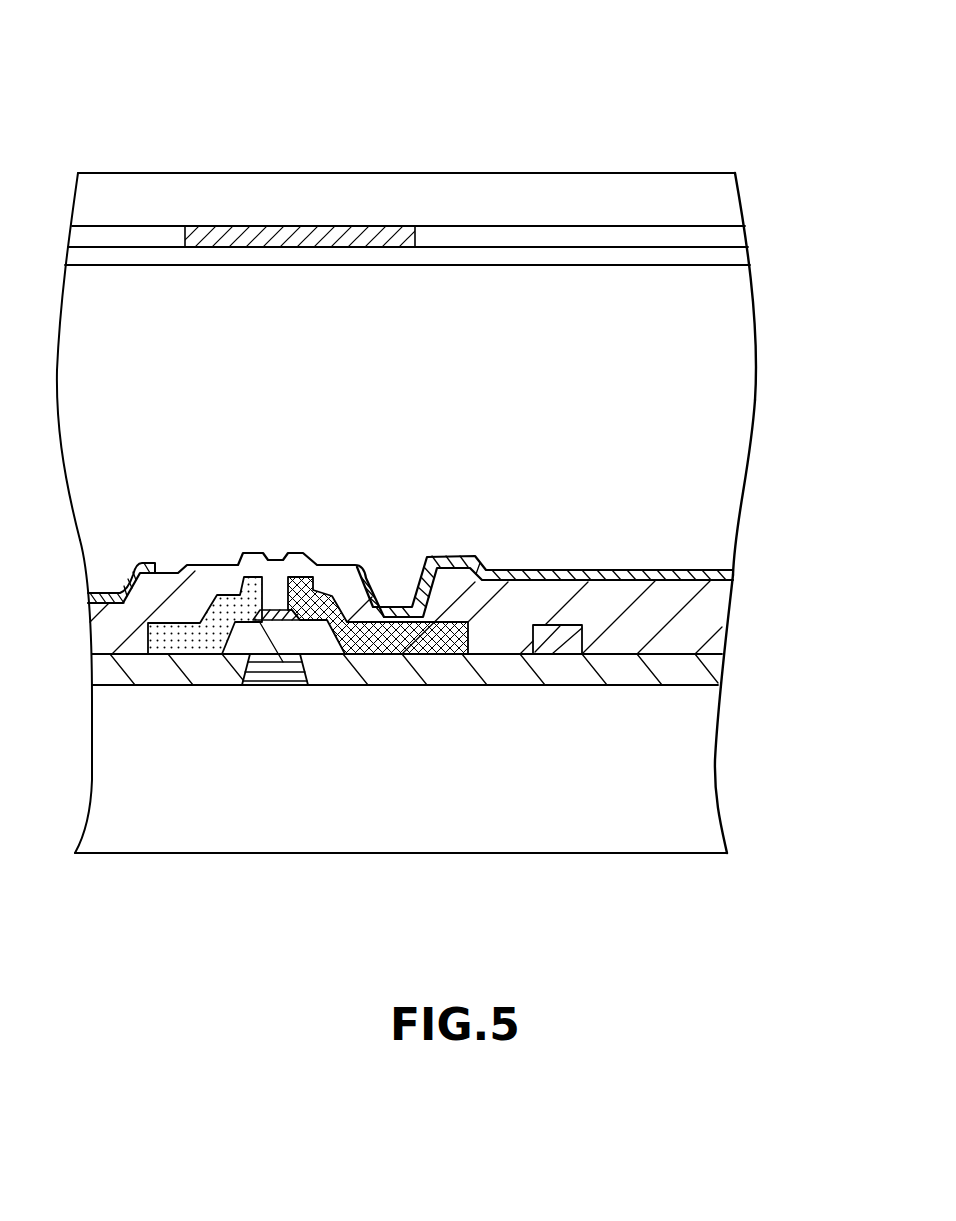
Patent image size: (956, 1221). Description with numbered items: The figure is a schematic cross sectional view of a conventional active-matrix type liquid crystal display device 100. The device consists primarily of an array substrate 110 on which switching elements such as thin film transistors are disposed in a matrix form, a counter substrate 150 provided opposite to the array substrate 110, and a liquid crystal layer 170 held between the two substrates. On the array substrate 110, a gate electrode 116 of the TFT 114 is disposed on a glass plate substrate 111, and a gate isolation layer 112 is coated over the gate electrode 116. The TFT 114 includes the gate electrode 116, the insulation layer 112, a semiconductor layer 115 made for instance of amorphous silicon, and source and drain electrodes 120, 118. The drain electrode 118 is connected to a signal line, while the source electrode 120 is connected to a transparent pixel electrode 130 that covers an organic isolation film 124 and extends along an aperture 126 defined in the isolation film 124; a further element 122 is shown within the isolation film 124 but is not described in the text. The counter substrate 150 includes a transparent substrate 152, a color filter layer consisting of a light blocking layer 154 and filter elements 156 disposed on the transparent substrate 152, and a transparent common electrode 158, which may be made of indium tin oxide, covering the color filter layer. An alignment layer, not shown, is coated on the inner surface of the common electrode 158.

The liquid crystal display device 100 is at (512, 148).
The array substrate 110 is at (795, 582).
The glass plate substrate 111 is at (712, 738).
The gate isolation layer 112 is at (712, 680).
The TFT 114 is at (175, 900).
The semiconductor layer 115 is at (260, 623).
The gate electrode 116 is at (284, 672).
The drain electrode 118 is at (247, 590).
The source electrode 120 is at (297, 577).
The storage electrode 122 is at (559, 637).
The organic isolation film 124 is at (190, 563).
The aperture 126 is at (398, 597).
The transparent pixel electrode 130 is at (124, 578).
The counter substrate 150 is at (825, 145).
The transparent substrate 152 is at (722, 203).
The light blocking layer 154 is at (303, 236).
The filter elements 156 is at (133, 240).
The transparent common electrode 158 is at (736, 257).
The liquid crystal layer 170 is at (738, 380).